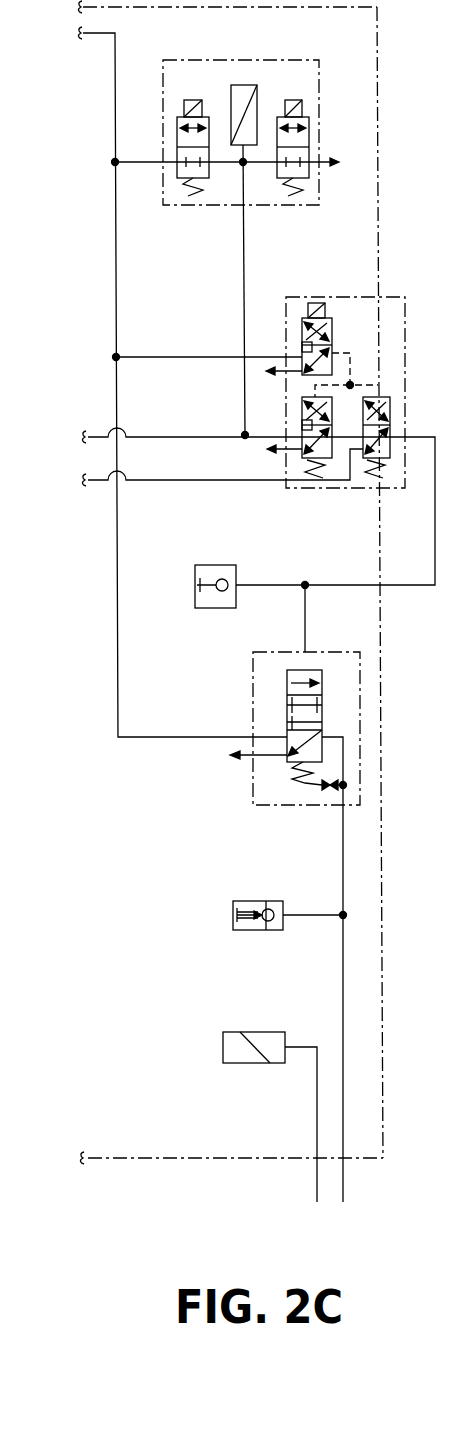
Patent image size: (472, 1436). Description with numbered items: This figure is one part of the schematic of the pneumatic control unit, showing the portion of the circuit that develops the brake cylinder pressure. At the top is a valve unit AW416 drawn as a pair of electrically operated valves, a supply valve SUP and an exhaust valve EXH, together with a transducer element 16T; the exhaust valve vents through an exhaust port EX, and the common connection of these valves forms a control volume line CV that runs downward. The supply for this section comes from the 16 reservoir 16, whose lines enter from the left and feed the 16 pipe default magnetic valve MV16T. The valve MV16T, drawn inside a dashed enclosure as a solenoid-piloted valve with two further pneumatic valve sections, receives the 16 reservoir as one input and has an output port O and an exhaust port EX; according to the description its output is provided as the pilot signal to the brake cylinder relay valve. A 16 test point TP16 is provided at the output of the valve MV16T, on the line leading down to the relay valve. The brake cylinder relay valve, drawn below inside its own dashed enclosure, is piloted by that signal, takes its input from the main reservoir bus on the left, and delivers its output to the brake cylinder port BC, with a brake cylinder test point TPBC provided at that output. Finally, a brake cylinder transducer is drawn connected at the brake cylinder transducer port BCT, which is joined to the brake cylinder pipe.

The application and release magnet valve unit AW416 is at (240, 120).
The supply magnet valve SUP is at (192, 137).
The exhaust magnet valve EXH is at (292, 137).
The 16 pipe transducer 16T is at (242, 104).
The exhaust port EX is at (355, 163).
The control volume line CV is at (258, 292).
The 16 reservoir 16 is at (231, 489).
The 16 pipe default magnetic valve MV16T is at (325, 378).
The output port O is at (277, 370).
The 16 test point TP16 is at (216, 573).
The brake cylinder port BC is at (342, 925).
The brake cylinder test point TPBC is at (290, 903).
The brake cylinder transducer port BCT is at (270, 1105).